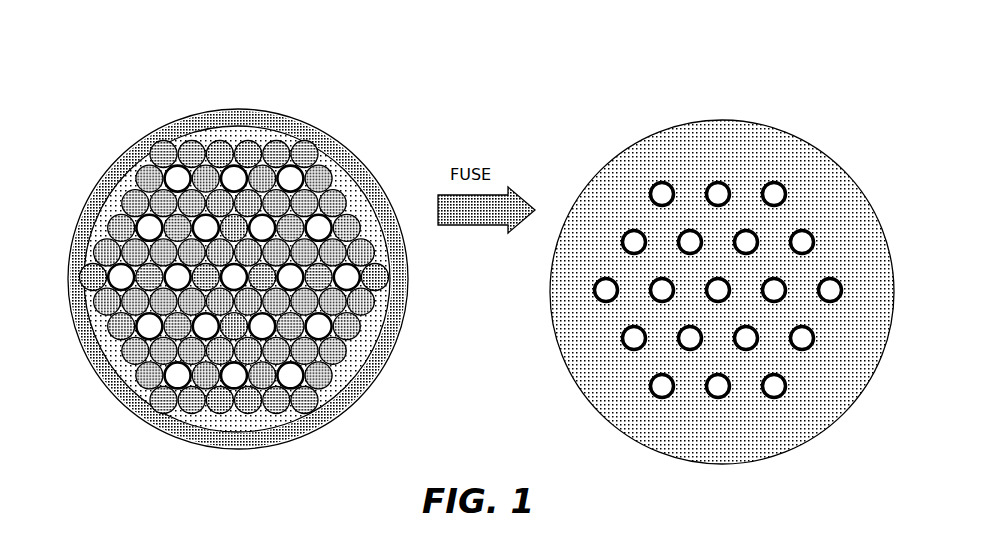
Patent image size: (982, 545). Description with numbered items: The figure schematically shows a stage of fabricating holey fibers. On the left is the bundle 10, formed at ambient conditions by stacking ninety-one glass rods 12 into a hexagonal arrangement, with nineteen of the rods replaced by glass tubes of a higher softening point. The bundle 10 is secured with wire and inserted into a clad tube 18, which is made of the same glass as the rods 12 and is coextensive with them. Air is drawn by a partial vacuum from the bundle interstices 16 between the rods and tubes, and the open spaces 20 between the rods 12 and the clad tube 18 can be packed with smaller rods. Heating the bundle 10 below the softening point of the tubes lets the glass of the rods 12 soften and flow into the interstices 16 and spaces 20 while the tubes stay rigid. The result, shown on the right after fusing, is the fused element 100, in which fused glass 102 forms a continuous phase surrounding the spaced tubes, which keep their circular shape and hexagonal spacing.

The bundle 10 is at (237, 227).
The rods 12 is at (345, 192).
The bundle interstices 16 is at (113, 242).
The clad tube 18 is at (188, 110).
The open spaces 20 is at (116, 356).
The fused element 100 is at (722, 251).
The fused glass 102 is at (765, 153).